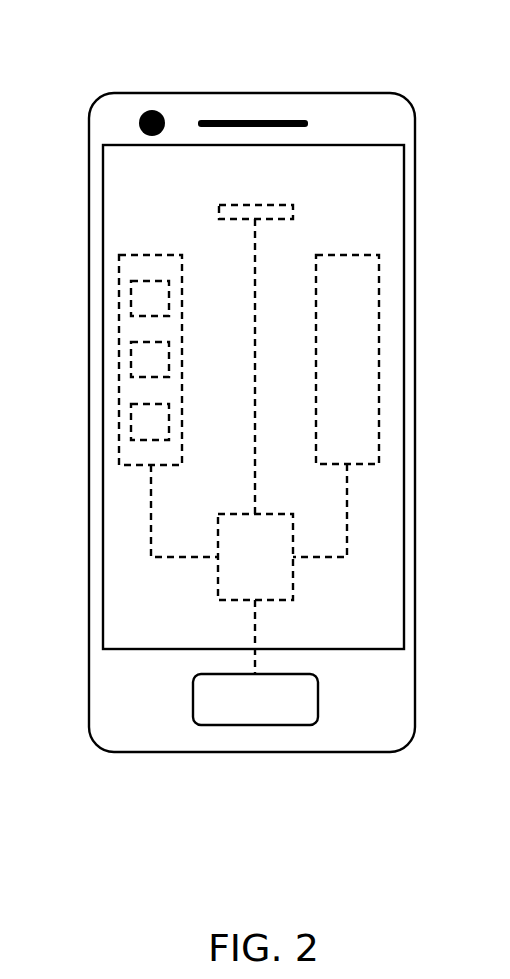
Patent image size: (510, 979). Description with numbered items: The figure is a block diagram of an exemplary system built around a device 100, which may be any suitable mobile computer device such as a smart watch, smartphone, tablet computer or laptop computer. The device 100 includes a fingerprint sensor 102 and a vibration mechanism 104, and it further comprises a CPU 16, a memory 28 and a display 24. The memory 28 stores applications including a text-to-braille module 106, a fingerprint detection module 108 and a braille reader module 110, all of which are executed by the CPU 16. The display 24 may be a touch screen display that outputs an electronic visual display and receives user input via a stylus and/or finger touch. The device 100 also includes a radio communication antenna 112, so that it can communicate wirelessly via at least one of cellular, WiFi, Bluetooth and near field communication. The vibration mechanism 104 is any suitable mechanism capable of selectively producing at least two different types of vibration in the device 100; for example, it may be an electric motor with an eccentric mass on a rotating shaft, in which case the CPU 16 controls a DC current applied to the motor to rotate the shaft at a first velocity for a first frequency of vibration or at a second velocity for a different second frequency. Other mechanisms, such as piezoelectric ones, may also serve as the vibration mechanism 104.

The device 100 is at (134, 80).
The display 24 is at (102, 568).
The fingerprint sensor 102 is at (233, 737).
The memory 28 is at (127, 253).
The text-to-braille module 106 is at (130, 295).
The fingerprint detection module 108 is at (130, 355).
The braille reader module 110 is at (130, 418).
The vibration mechanism 104 is at (378, 391).
The radio communication antenna 112 is at (292, 210).
The CPU 16 is at (292, 572).